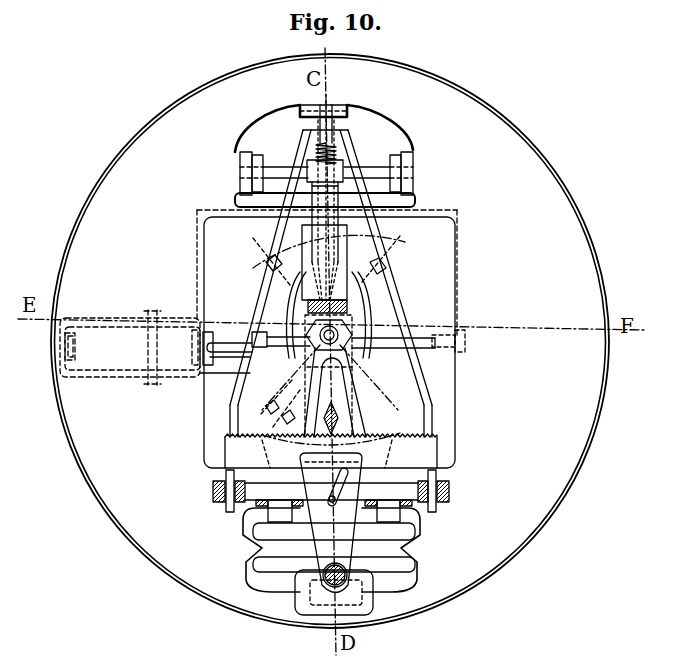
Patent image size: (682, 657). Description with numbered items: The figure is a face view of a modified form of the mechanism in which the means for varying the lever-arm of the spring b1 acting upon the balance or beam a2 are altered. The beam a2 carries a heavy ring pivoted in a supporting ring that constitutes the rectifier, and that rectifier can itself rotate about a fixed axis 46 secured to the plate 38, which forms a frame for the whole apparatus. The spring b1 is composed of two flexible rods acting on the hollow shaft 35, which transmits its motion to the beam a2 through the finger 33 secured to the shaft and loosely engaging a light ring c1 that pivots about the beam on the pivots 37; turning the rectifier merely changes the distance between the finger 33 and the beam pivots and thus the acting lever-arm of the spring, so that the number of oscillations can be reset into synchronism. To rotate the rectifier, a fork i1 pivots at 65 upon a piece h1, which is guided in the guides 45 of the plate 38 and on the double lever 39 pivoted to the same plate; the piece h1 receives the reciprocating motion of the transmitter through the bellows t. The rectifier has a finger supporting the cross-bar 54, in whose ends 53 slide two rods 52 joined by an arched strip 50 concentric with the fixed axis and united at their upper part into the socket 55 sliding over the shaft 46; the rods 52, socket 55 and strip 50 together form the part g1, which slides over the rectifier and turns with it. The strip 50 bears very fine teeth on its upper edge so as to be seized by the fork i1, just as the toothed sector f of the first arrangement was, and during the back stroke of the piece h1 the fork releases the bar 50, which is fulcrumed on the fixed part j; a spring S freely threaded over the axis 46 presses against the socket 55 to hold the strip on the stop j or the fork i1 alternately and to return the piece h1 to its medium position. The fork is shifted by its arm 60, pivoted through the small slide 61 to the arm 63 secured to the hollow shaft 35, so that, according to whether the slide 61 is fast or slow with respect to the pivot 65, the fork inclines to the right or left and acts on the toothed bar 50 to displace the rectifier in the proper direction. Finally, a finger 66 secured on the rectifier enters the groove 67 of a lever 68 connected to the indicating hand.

The fixed axis 46 is at (327, 107).
The socket 55 is at (341, 139).
The double lever 39 is at (240, 169).
The arm 60 is at (266, 336).
The small slide 61 is at (247, 338).
The pivot 65 is at (348, 324).
The hollow shaft 35 is at (430, 343).
The pivots 37 is at (386, 270).
The arm 63 is at (229, 356).
The finger 33 is at (296, 348).
The rods 52 is at (229, 432).
The arched strip 50 is at (224, 462).
The plate 38 is at (456, 446).
The cross-bar 54 is at (400, 484).
The ends of the cross-bar 53 is at (213, 494).
The guides 45 is at (260, 506).
The groove 67 is at (333, 506).
The finger 66 is at (351, 470).
The lever 68 is at (335, 568).
The spring S is at (317, 152).
The toothed sector f is at (304, 243).
The balance or beam a2 is at (381, 266).
The spring b1 is at (234, 288).
The light ring c1 is at (289, 285).
The sliding part g1 is at (331, 451).
The piece h1 is at (357, 382).
The fork i1 is at (357, 411).
The fixed part j is at (335, 392).
The bellows t is at (331, 561).